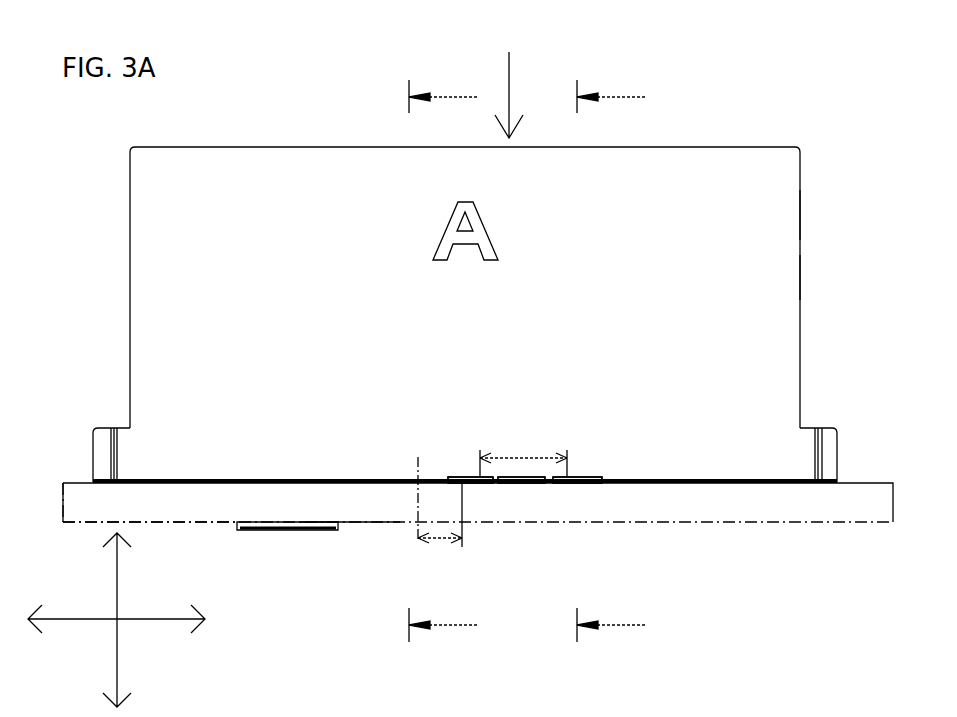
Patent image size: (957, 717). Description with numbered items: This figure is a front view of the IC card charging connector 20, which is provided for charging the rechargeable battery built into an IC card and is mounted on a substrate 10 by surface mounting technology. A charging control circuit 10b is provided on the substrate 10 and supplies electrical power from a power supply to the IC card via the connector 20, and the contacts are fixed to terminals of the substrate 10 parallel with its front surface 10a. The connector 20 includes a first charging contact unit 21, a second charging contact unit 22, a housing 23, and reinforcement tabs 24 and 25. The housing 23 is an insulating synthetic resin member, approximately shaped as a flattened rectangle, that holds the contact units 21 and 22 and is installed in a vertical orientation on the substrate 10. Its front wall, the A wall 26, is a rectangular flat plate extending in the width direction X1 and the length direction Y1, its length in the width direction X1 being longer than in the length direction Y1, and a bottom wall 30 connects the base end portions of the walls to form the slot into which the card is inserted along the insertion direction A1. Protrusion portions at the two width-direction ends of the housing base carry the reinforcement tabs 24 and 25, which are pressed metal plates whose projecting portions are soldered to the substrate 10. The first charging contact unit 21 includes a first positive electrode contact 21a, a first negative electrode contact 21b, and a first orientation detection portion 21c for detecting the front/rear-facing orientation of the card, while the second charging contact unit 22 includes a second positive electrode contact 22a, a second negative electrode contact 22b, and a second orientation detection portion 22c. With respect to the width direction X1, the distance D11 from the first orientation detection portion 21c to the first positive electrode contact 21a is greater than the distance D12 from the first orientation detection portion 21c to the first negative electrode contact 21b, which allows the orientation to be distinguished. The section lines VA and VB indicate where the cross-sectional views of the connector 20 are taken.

The substrate 10 is at (210, 525).
The front surface of the substrate 10a is at (248, 462).
The charging control circuit 10b is at (292, 530).
The IC card charging connector 20 is at (723, 145).
The first charging contact unit 21 is at (497, 437).
The first positive electrode contact 21a is at (575, 485).
The first negative electrode contact 21b is at (405, 485).
The first orientation detection portion 21c is at (470, 485).
The second charging contact unit 22 is at (465, 453).
The second positive electrode contact 22a is at (350, 483).
The second negative electrode contact 22b is at (518, 485).
The second orientation detection portion 22c is at (453, 485).
The housing 23 is at (778, 218).
The reinforcement tab 24 is at (112, 445).
The reinforcement tab 25 is at (820, 457).
The A wall 26 is at (790, 282).
The bottom wall 30 is at (777, 472).
The insertion direction A1 is at (509, 82).
The distance from first orientation detection portion to first positive electrode co D11 is at (523, 446).
The distance from first orientation detection portion to first negative electrode co D12 is at (437, 515).
The line VA- VA is at (443, 352).
The line VB- VB is at (611, 352).
The width direction X1 is at (157, 618).
The length direction Y1 is at (117, 581).